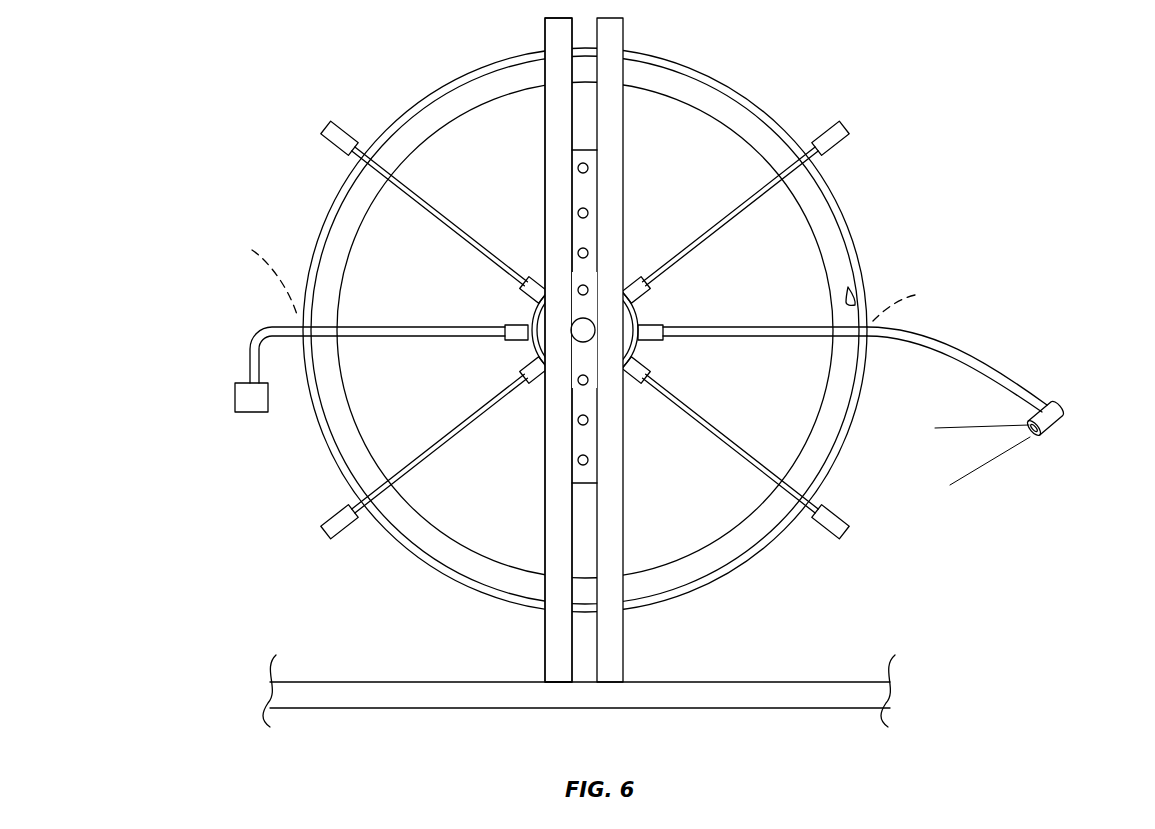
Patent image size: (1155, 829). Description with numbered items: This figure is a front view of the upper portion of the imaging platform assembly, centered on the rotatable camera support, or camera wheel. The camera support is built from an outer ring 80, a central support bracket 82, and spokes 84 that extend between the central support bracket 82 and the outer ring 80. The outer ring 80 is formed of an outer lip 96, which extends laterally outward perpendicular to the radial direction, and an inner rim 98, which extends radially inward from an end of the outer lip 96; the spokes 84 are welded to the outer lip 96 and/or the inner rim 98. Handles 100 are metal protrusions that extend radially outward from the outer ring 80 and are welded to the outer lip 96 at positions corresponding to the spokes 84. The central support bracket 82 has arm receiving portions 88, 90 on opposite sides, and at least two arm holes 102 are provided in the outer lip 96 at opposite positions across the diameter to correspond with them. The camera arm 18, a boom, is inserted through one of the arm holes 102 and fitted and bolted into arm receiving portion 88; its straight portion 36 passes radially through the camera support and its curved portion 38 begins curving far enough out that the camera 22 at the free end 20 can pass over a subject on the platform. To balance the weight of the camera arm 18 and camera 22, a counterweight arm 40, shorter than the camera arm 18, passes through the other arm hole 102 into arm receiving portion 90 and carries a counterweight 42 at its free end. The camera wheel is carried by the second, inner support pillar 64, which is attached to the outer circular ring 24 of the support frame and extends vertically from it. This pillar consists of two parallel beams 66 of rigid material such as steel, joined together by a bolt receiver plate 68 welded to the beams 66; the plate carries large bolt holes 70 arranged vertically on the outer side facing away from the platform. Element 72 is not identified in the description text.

The camera arm 18 is at (957, 358).
The free end 20 is at (1044, 403).
The camera 22 is at (1081, 391).
The outer circular ring 24 is at (840, 708).
The straight portion 36 is at (762, 340).
The curved portion 38 is at (961, 371).
The counterweight arm 40 is at (285, 320).
The counterweight 42 is at (236, 392).
The second, inner support pillar 64 is at (543, 158).
The parallel beams 66 is at (545, 36).
The bolt receiver plate 68 is at (580, 486).
The bolt holes 70 is at (588, 167).
The axle 72 is at (590, 319).
The outer ring 80 is at (843, 196).
The central support bracket 82 is at (526, 346).
The spokes 84 is at (452, 230).
The arm receiving portion 88 is at (665, 325).
The arm receiving portion 90 is at (510, 322).
The outer lip 96 is at (853, 300).
The inner rim 98 is at (818, 240).
The handles 100 is at (322, 130).
The arm holes 102 is at (890, 540).